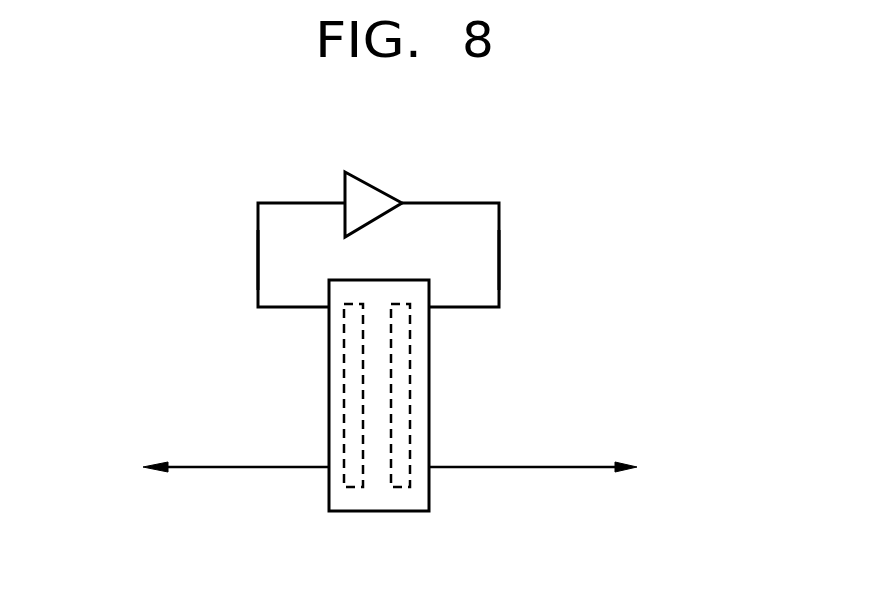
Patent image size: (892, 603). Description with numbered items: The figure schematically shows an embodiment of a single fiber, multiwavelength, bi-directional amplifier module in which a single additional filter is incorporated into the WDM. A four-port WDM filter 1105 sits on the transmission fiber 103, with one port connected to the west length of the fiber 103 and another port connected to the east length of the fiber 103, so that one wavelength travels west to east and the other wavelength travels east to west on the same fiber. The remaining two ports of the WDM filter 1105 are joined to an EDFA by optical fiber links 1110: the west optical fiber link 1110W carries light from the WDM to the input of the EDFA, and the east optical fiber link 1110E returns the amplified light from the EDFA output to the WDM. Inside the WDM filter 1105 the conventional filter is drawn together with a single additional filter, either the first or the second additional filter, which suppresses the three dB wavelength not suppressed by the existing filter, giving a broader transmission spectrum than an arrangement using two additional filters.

The transmission fiber 103 is at (387, 468).
The 4-port WDM filter 1105 is at (377, 417).
The optical fiber link 1110 is at (379, 232).
The west optical fiber link 1110W is at (258, 250).
The east optical fiber link 1110E is at (499, 249).